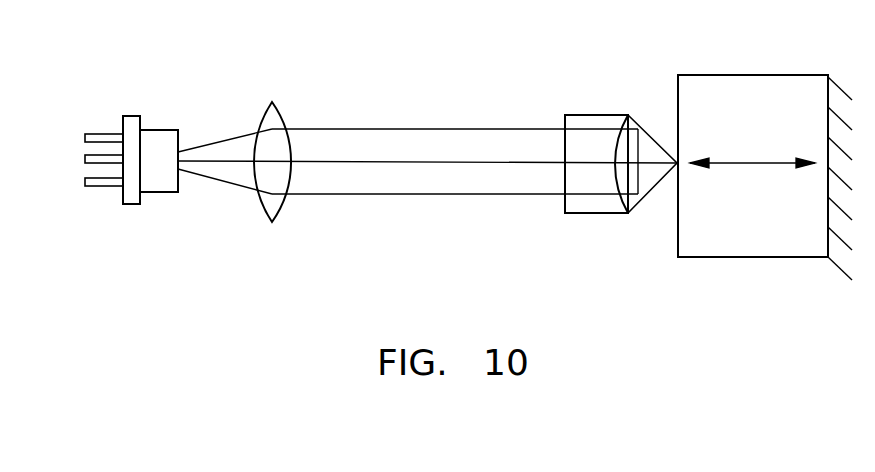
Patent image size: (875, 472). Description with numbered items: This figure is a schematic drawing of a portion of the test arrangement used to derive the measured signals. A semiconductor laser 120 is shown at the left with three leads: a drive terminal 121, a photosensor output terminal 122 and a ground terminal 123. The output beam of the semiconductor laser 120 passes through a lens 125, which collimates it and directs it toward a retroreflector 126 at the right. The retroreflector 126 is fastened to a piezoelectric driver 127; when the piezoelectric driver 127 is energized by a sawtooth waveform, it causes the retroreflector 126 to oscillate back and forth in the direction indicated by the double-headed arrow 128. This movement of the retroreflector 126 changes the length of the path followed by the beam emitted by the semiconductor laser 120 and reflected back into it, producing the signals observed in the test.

The semiconductor laser 120 is at (158, 130).
The drive terminal 121 is at (83, 138).
The photosensor output terminal 122 is at (83, 158).
The ground terminal 123 is at (83, 182).
The lens 125 is at (282, 118).
The retroreflector 126 is at (597, 113).
The piezoelectric driver 127 is at (747, 73).
The arrow 128 is at (767, 162).